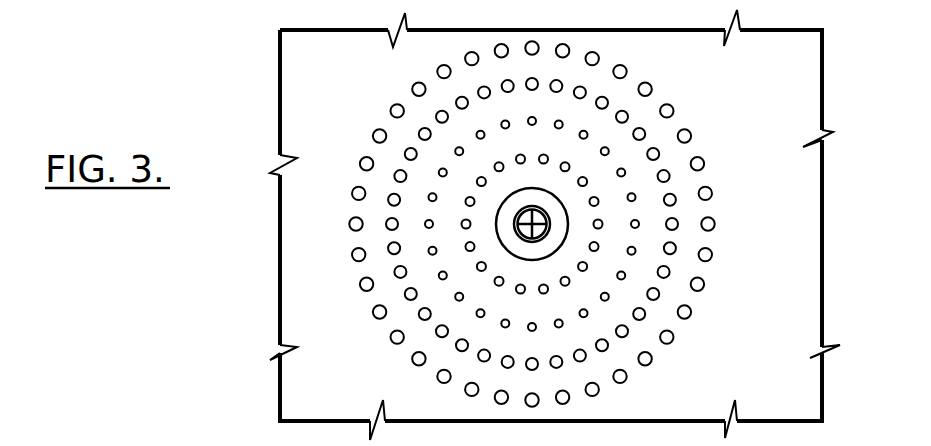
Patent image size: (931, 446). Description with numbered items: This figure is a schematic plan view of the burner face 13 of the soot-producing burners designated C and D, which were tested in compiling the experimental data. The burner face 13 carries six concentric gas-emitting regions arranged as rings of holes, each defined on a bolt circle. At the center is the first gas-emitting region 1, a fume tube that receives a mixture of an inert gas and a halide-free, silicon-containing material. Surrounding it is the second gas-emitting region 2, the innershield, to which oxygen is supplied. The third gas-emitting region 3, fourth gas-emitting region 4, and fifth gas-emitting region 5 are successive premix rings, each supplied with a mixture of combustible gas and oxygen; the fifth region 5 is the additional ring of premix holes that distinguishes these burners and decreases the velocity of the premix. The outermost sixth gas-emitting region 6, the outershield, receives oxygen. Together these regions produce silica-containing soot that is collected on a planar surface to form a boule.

The first gas-emitting region 1 is at (515, 232).
The second gas-emitting region 2 is at (550, 251).
The third gas-emitting region 3 is at (599, 249).
The fourth gas-emitting region 4 is at (639, 223).
The fifth gas-emitting region 5 is at (658, 150).
The sixth gas-emitting region 6 is at (652, 86).
The burner face 13 is at (336, 87).